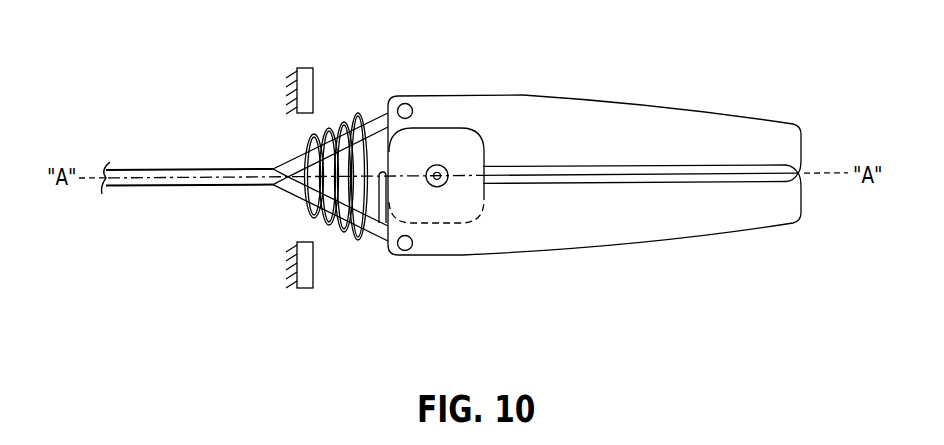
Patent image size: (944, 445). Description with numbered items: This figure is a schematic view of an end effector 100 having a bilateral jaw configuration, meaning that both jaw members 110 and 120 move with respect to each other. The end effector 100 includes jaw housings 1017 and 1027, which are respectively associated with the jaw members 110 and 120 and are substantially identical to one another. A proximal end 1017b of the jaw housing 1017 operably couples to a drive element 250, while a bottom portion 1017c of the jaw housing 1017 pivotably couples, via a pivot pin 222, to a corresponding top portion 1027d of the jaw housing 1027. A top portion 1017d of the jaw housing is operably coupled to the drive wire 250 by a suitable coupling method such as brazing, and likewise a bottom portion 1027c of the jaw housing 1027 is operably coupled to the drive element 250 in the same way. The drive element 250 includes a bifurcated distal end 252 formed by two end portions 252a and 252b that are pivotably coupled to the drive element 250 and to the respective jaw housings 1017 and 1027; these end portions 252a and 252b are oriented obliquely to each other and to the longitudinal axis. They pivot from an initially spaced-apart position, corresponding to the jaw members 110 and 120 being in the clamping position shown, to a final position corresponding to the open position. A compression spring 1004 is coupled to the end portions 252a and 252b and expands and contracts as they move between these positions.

The end effector 100 is at (751, 31).
The jaw member 110 is at (797, 125).
The jaw member 120 is at (797, 222).
The pivot pin 222 is at (437, 164).
The drive element 250 is at (192, 168).
The bifurcated distal end 252 is at (285, 182).
The end portion 252a is at (370, 120).
The end portion 252b is at (364, 234).
The compression spring 1004 is at (328, 128).
The jaw housing 1017 is at (623, 102).
The proximal end 1017b is at (523, 93).
The bottom portion 1017c is at (467, 150).
The top portion 1017d is at (393, 97).
The jaw housing 1027 is at (626, 247).
The bottom portion 1027c is at (392, 256).
The top portion 1027d is at (448, 205).